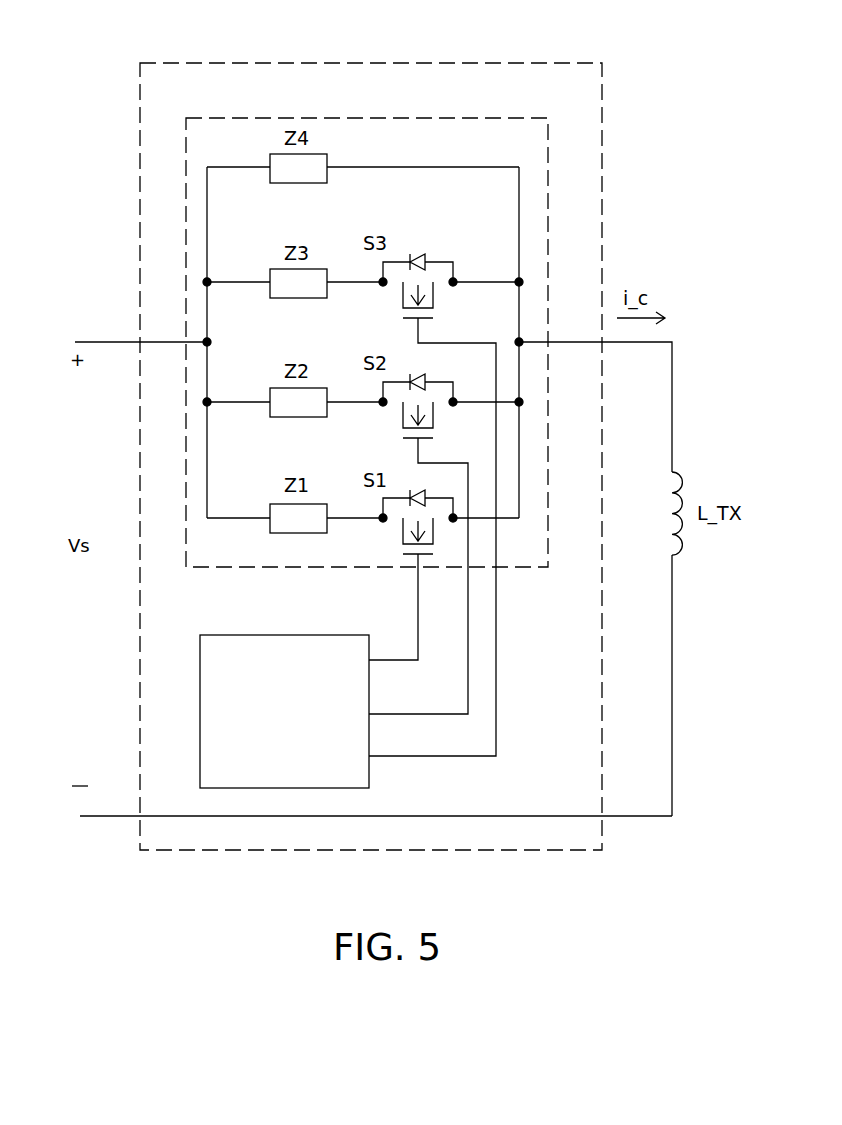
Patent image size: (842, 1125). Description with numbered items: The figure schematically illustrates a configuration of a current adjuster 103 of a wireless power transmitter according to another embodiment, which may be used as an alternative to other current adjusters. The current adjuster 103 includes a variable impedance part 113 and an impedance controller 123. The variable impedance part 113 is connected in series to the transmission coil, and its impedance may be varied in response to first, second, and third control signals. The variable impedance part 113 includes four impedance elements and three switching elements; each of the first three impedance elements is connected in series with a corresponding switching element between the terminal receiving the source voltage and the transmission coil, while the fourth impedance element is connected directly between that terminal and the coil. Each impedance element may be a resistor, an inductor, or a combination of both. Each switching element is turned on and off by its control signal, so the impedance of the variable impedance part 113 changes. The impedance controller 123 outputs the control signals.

The current adjuster 103 is at (567, 63).
The variable impedance part 113 is at (517, 118).
The impedance controller 123 is at (341, 635).